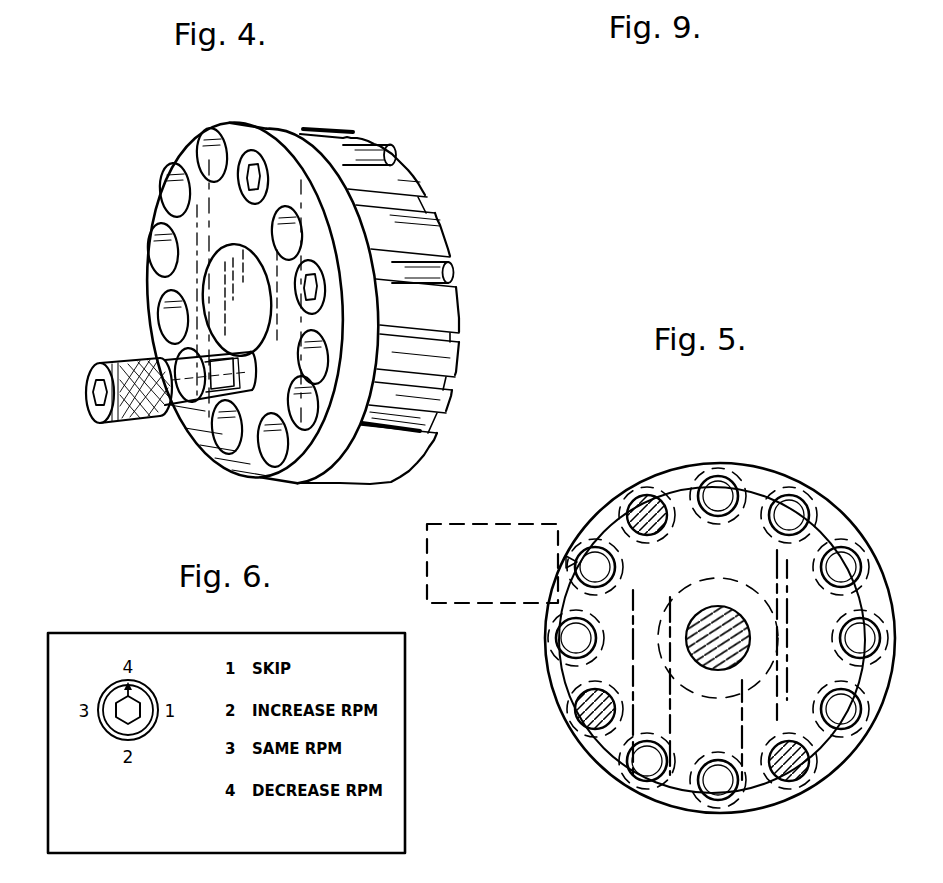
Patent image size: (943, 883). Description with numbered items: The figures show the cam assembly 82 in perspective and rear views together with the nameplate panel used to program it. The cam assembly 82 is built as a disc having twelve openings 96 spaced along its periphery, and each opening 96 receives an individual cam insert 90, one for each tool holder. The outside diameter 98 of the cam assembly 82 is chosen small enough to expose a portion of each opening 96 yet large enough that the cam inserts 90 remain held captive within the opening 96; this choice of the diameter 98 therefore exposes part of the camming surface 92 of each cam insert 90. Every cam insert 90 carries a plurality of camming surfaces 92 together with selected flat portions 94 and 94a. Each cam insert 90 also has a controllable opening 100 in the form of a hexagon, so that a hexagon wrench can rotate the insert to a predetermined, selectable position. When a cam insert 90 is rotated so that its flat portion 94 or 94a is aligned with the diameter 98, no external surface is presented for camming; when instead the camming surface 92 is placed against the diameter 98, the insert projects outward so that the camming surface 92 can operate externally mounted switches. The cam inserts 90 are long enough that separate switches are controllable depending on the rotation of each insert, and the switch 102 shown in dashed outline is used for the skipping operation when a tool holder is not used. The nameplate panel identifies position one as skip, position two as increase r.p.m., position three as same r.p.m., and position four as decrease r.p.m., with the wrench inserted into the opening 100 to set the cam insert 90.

In FIG. 4, the cam assembly 82 is at (153, 174).
In FIG. 5, the cam assembly 82 is at (808, 463).
In FIG. 4, the cam insert 90 is at (121, 433).
In FIG. 5, the cam insert 90 is at (721, 478).
In FIG. 6, the cam insert 90 is at (143, 736).
In FIG. 4, the camming surface 92 is at (344, 162).
In FIG. 4, the flat portion 94 is at (176, 361).
In FIG. 5, the flat portion 94 is at (648, 498).
In FIG. 4, the flat portion 94a is at (224, 404).
In FIG. 5, the flat portion 94a is at (612, 706).
In FIG. 4, the opening 96 is at (337, 129).
In FIG. 5, the opening 96 is at (640, 772).
In FIG. 4, the outside diameter 98 is at (446, 234).
In FIG. 5, the outside diameter 98 is at (826, 540).
In FIG. 4, the controllable opening 100 is at (252, 172).
In FIG. 6, the controllable opening 100 is at (118, 720).
In FIG. 5, the switch 102 is at (514, 527).